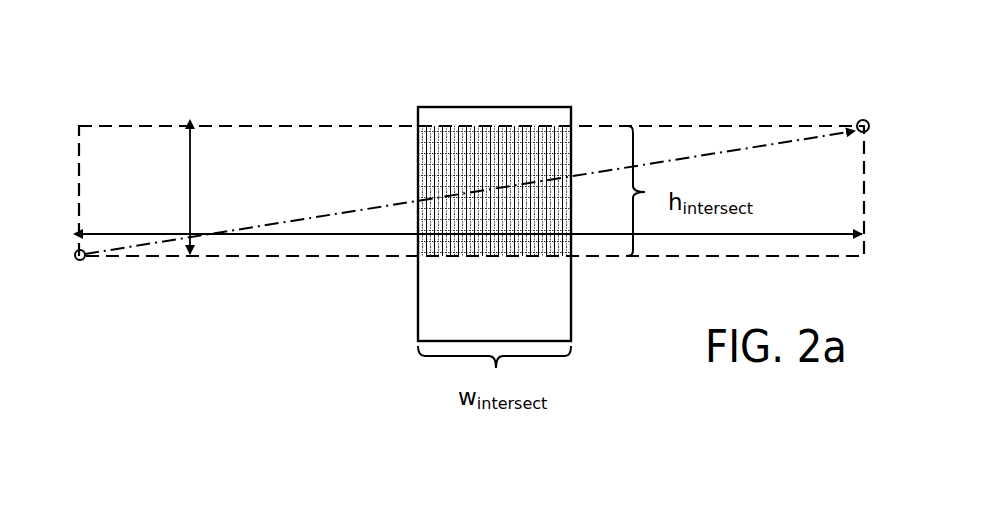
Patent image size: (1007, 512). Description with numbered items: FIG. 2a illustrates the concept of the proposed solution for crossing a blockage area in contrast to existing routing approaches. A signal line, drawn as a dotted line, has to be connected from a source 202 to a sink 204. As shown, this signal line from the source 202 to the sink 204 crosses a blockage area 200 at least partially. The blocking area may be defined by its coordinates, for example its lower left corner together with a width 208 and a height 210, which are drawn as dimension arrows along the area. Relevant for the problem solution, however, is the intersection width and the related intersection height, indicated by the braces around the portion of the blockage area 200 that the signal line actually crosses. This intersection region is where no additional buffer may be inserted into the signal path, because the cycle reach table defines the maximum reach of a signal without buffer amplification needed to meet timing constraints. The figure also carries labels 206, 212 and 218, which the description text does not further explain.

The blockage area 200 is at (495, 104).
The source 202 is at (78, 284).
The sink 204 is at (859, 106).
The intersection region (hatched) 206 is at (530, 142).
The width 208 is at (107, 224).
The height 210 is at (198, 161).
The element 212 is at (139, 506).
The element 218 is at (283, 511).